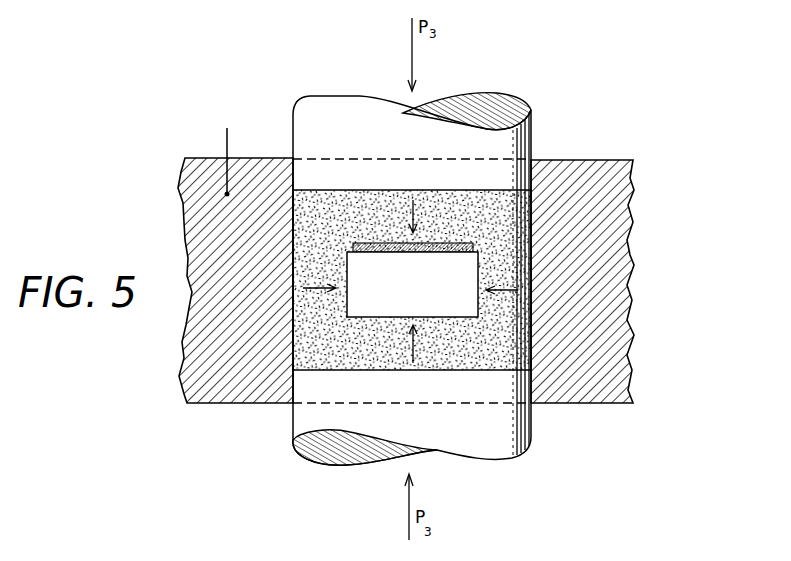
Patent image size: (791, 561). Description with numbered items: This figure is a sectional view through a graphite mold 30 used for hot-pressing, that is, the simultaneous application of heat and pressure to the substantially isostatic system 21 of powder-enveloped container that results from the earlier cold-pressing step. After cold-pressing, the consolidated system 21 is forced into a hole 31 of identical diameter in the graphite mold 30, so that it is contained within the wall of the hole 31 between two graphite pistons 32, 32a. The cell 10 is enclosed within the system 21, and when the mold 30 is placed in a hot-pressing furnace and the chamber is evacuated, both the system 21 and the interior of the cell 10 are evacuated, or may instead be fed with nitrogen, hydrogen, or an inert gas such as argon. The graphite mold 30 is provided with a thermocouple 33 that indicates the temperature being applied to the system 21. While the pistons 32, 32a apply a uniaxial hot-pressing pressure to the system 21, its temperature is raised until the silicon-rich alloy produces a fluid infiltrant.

The cell 10 is at (365, 320).
The substantially isostatic system 21 is at (516, 222).
The graphite mold 30 is at (543, 149).
The hole 31 is at (330, 190).
The graphite piston 32 is at (483, 440).
The graphite piston 32a is at (296, 127).
The thermocouple 33 is at (226, 194).